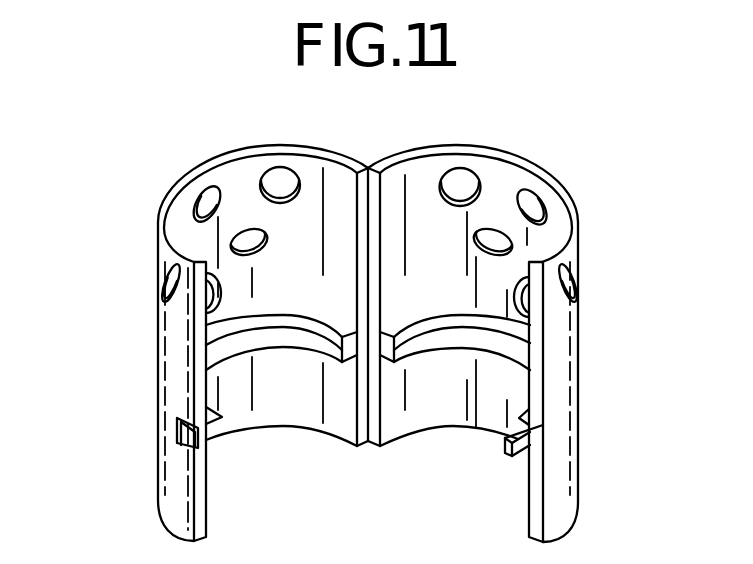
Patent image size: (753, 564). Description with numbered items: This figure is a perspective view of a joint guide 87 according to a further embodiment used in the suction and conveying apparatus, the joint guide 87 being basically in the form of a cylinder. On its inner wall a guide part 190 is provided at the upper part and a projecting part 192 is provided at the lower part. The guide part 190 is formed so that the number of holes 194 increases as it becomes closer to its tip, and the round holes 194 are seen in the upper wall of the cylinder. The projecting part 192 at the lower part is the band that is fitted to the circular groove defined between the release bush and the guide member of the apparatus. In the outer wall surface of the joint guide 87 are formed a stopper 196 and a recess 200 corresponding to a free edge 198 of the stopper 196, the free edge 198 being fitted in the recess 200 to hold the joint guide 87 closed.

The joint guide 87 is at (356, 319).
The guide part 190 is at (413, 212).
The projecting part 192 is at (503, 344).
The holes 194 is at (460, 183).
The stopper 196 is at (517, 444).
The free edge 198 is at (508, 455).
The recess 200 is at (177, 433).